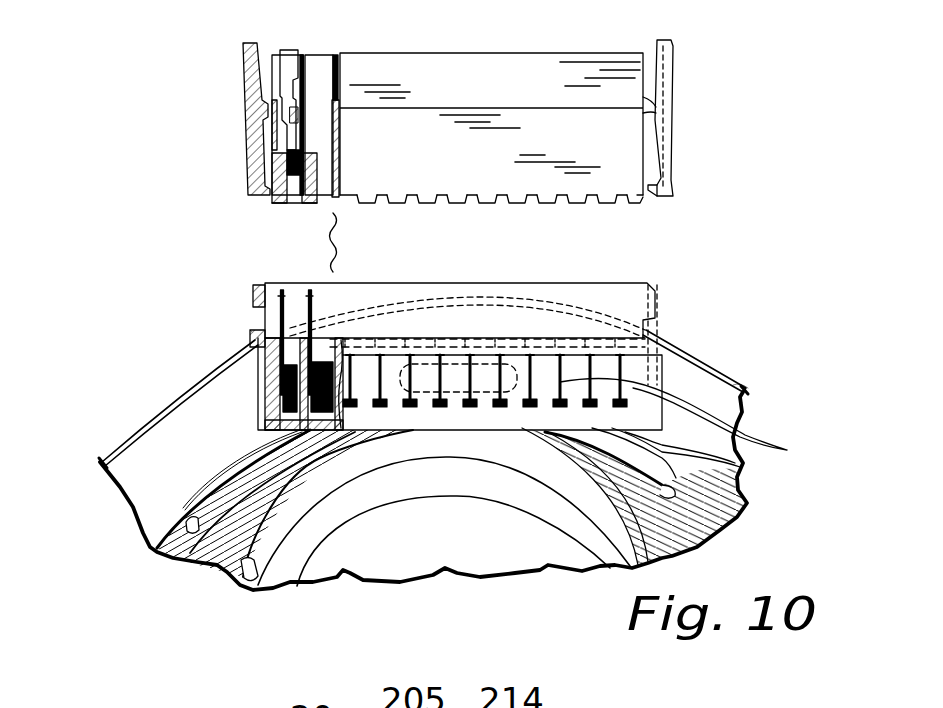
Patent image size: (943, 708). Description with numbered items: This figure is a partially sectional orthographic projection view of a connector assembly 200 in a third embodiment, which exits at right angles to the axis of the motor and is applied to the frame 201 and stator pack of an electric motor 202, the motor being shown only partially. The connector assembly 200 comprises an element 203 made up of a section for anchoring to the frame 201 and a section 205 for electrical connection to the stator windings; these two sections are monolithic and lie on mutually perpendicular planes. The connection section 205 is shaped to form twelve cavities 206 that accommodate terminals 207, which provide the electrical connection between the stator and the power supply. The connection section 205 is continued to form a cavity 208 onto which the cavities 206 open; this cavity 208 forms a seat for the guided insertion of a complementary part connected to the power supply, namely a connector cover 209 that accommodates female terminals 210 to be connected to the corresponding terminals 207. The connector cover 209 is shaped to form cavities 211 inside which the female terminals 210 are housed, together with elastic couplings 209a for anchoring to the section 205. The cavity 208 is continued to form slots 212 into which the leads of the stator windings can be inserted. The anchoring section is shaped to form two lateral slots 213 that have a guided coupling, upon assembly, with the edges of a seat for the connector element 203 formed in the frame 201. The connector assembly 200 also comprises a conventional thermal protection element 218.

The connector assembly 200 is at (760, 345).
The frame 201 is at (737, 384).
The electric motor 202 is at (223, 587).
The element 203 is at (247, 330).
The section for electrical connection 205 is at (448, 322).
The cavities 206 is at (277, 383).
The terminals 207 is at (322, 363).
The cavity 208 is at (293, 288).
The connector cover 209 is at (535, 60).
The elastic couplings 209a is at (246, 72).
The female terminals 210 is at (293, 135).
The cavities 211 is at (322, 70).
The slots 212 is at (628, 417).
The lateral slots 213 is at (653, 327).
The thermal protection element 218 is at (487, 373).